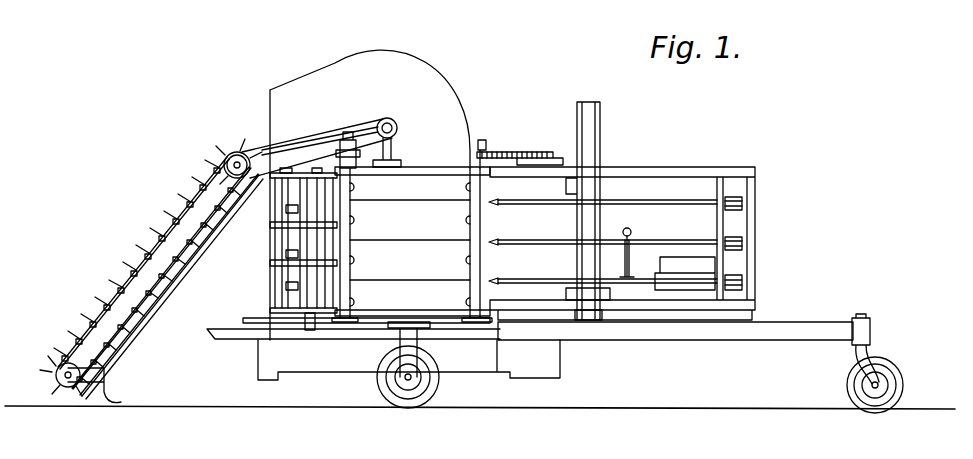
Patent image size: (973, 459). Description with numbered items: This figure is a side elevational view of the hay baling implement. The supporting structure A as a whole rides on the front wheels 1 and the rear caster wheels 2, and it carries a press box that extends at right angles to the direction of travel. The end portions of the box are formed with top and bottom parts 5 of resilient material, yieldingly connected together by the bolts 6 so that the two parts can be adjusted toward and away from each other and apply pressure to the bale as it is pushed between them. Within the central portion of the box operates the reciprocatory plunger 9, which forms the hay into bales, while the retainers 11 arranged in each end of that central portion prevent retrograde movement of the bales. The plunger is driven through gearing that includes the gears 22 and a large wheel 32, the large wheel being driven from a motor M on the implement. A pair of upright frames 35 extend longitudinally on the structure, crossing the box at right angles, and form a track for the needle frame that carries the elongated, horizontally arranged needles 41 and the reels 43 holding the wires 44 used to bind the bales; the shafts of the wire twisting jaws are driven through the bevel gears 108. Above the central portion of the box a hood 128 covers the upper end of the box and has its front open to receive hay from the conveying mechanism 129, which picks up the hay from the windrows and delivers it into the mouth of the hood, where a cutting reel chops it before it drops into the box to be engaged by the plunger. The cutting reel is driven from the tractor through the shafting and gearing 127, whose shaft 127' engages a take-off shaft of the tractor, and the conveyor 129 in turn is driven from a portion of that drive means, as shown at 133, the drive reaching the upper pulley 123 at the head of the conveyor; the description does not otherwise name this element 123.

The conveying mechanism 129 is at (146, 229).
The upper conveyor pulley 123 is at (299, 135).
The conveyor drive 133 is at (317, 148).
The shafting and gearing 127 is at (386, 127).
The hood 128 is at (438, 88).
The retainers 11 is at (325, 366).
The supporting structure A is at (655, 352).
The front wheels 1 is at (376, 385).
The rear caster wheels 2 is at (891, 374).
The reciprocatory plunger 9 is at (412, 245).
The top and bottom parts 5 is at (412, 241).
The wires 44 is at (443, 212).
The bolts 6 is at (354, 196).
The bevel gears 108 is at (276, 288).
The shaft 127' is at (366, 336).
The gears 22 is at (540, 150).
The large wheel 32 is at (609, 146).
The upright frames 35 is at (663, 167).
The needles 41 is at (668, 204).
The reels 43 is at (742, 200).
The motor M is at (733, 262).